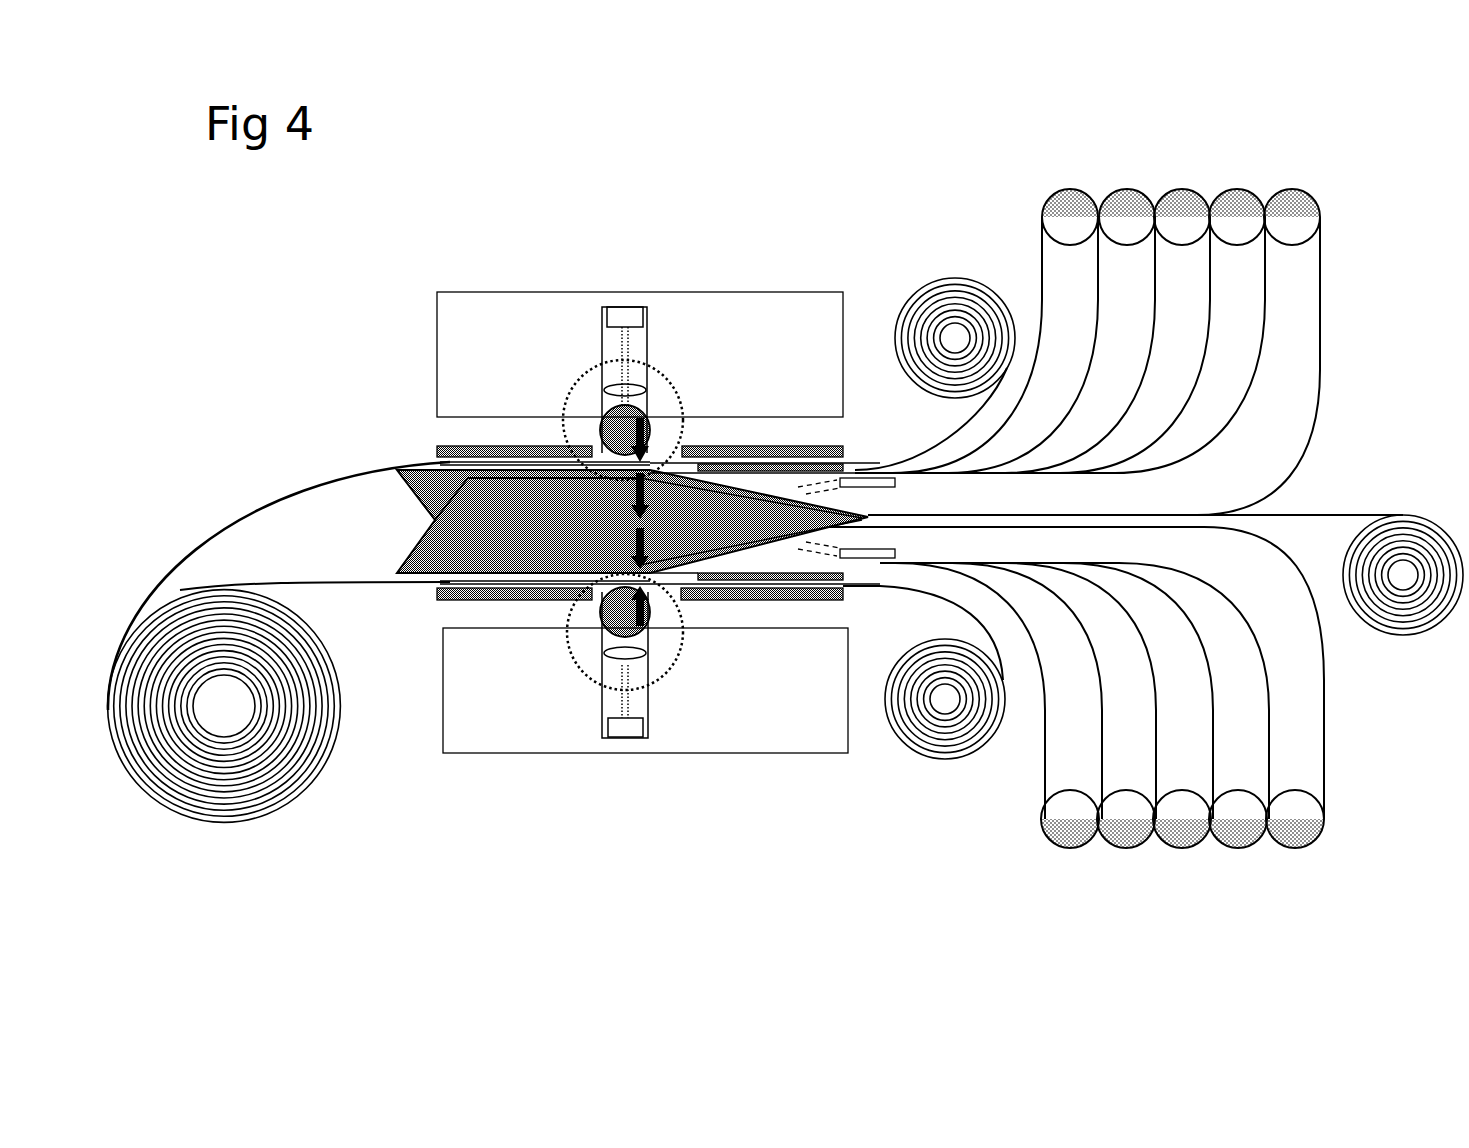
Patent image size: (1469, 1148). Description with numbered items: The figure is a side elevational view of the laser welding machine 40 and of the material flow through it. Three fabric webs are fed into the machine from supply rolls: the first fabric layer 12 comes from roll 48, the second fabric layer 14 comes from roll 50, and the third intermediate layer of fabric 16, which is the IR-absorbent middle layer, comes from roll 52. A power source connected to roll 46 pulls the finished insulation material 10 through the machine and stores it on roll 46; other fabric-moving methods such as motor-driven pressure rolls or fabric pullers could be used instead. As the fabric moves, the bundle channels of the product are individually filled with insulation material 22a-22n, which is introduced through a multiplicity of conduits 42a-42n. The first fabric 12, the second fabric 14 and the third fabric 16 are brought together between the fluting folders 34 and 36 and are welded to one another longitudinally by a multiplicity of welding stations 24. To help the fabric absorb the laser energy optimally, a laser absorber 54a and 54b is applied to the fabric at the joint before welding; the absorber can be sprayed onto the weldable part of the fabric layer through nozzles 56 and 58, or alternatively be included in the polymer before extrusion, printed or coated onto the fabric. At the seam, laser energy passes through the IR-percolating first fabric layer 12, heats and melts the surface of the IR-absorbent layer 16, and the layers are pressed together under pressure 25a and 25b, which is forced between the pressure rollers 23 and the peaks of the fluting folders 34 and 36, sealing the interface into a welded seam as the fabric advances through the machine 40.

The insulation material 10 is at (218, 558).
The first fabric layer 12 is at (931, 419).
The second fabric layer 14 is at (923, 633).
The third intermediate layer of fabric 16 is at (1297, 513).
The insulation material 22a-22n is at (1250, 215).
The pressure rollers 23 is at (598, 445).
The welding stations 24 is at (666, 455).
The pressure 25a is at (650, 470).
The pressure 25b is at (643, 400).
The folder 34 is at (432, 482).
The folder 36 is at (447, 525).
The welding machine 40 is at (477, 163).
The conduits 42a-42n is at (1125, 212).
The roll 46 is at (212, 713).
The roll 48 is at (940, 325).
The roll 50 is at (956, 741).
The roll 52 is at (1373, 543).
The laser absorber 54a is at (840, 480).
The laser absorber 54b is at (840, 562).
The nozzle 56 is at (875, 560).
The nozzle 58 is at (877, 477).